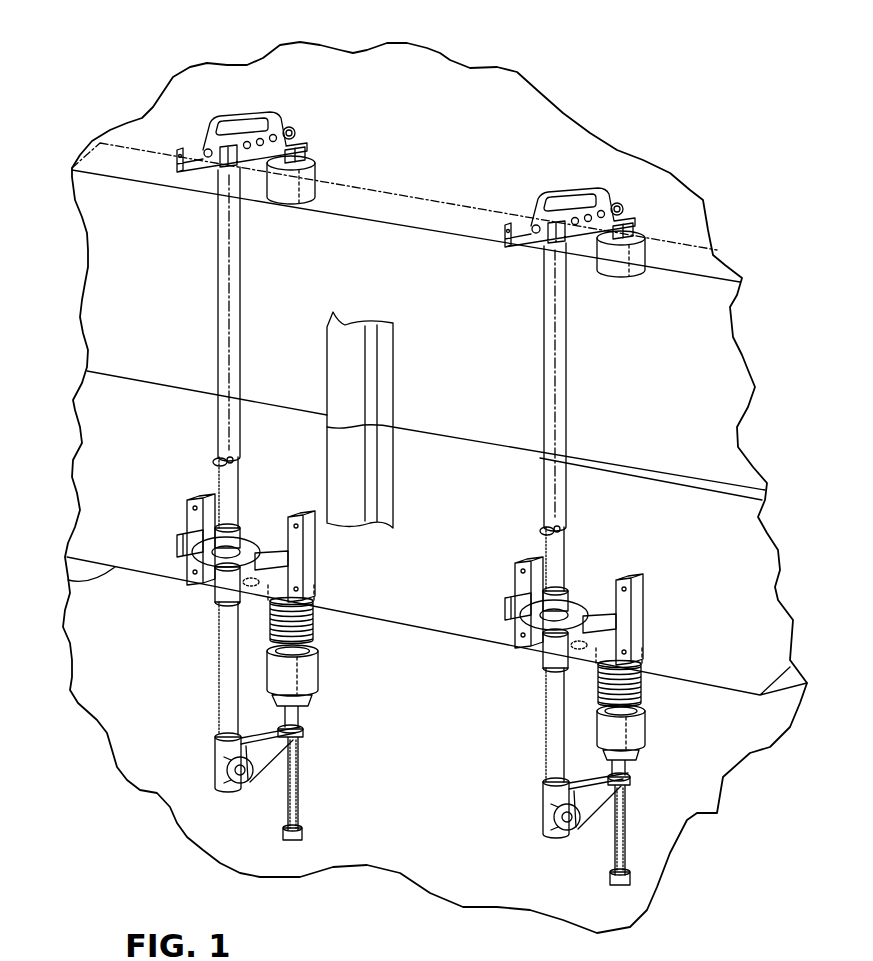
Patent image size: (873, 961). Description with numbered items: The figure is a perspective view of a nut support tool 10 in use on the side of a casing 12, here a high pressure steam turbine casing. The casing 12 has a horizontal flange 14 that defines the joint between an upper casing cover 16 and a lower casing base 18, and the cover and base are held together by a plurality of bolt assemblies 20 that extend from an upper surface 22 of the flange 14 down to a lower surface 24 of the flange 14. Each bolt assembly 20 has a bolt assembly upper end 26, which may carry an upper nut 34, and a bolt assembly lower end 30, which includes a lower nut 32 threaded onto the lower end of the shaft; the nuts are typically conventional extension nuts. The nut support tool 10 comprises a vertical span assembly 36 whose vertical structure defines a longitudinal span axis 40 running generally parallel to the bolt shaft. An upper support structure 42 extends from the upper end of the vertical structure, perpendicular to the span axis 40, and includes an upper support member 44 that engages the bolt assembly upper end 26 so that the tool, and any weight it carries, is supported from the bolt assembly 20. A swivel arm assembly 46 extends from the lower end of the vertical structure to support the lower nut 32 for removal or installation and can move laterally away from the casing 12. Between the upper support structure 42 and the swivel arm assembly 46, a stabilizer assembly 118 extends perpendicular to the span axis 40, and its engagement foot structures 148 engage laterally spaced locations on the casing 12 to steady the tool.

The nut support tool 10 is at (200, 344).
The casing 12 is at (92, 121).
The horizontal flange 14 is at (88, 256).
The upper casing cover 16 is at (145, 133).
The lower casing base 18 is at (132, 707).
The bolt assembly 20 is at (319, 139).
The upper surface 22 is at (150, 160).
The lower surface 24 is at (70, 581).
The bolt assembly upper end 26 is at (329, 169).
The bolt assembly lower end 30 is at (261, 627).
The lower nut 32 is at (307, 682).
The upper nut 34 is at (308, 193).
The vertical span assembly 36 is at (212, 310).
The longitudinal span axis 40 is at (240, 318).
The upper support structure 42 is at (246, 96).
The upper support member 44 is at (290, 119).
The swivel arm assembly 46 is at (251, 788).
The stabilizer assembly 118 is at (161, 532).
The engagement foot structure 148 is at (195, 494).